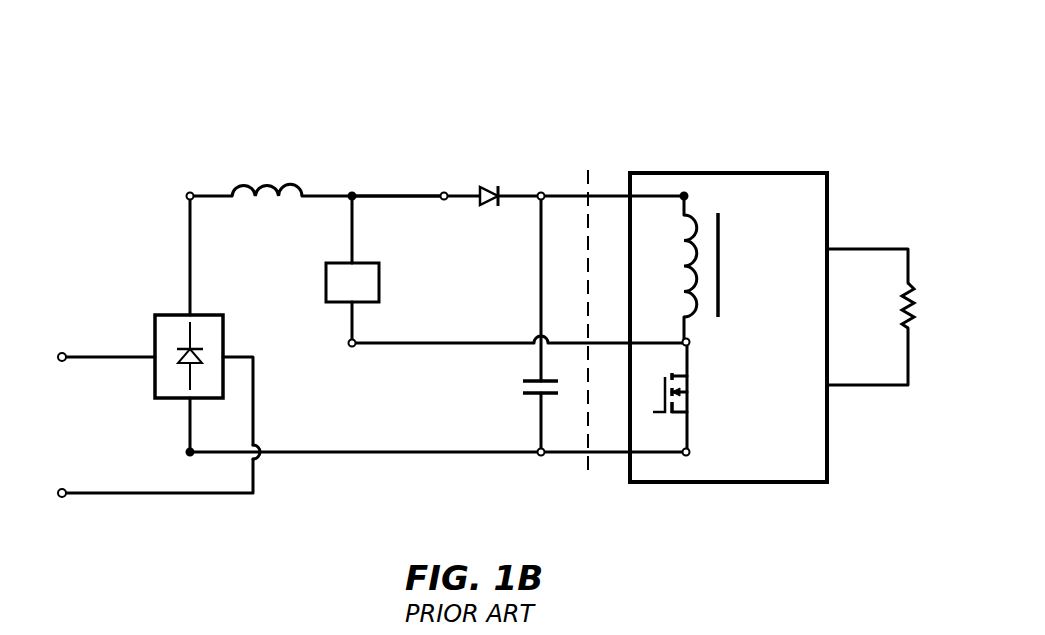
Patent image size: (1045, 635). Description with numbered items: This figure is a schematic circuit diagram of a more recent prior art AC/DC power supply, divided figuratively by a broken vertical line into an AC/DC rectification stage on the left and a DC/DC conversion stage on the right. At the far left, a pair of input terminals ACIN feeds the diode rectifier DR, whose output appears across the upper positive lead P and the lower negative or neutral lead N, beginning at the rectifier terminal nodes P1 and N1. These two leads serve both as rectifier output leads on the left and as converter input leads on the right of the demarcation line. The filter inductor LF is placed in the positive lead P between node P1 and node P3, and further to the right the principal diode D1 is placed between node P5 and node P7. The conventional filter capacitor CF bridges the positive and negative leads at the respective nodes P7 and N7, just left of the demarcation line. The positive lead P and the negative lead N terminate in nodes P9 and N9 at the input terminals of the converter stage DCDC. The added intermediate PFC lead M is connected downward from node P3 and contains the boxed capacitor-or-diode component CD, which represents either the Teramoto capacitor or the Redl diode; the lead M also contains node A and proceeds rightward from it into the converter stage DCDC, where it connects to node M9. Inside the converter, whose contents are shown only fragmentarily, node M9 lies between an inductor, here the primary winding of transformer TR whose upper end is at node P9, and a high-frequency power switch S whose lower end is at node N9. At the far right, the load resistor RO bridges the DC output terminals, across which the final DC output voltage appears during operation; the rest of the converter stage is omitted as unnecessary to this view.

The node P1 is at (190, 192).
The filter inductor LF is at (267, 174).
The node P3 is at (352, 193).
The positive lead P is at (393, 194).
The node P5 is at (444, 193).
The principal diode D1 is at (490, 208).
The node P7 is at (575, 160).
The C/D CD is at (352, 282).
The intermediate lead M is at (437, 341).
The node A is at (352, 347).
The filter capacitor CF is at (534, 392).
The node N7 is at (541, 456).
The negative lead N is at (378, 455).
The node N1 is at (186, 454).
The diode rectifier DR is at (185, 344).
The input terminals ACIN is at (81, 425).
The DC/DC converter stage DCDC is at (707, 313).
The node P9 is at (688, 196).
The transformer TR is at (721, 265).
The node M9 is at (690, 342).
The high-frequency power switch S is at (681, 394).
The node N9 is at (690, 453).
The load resistor RO is at (924, 305).